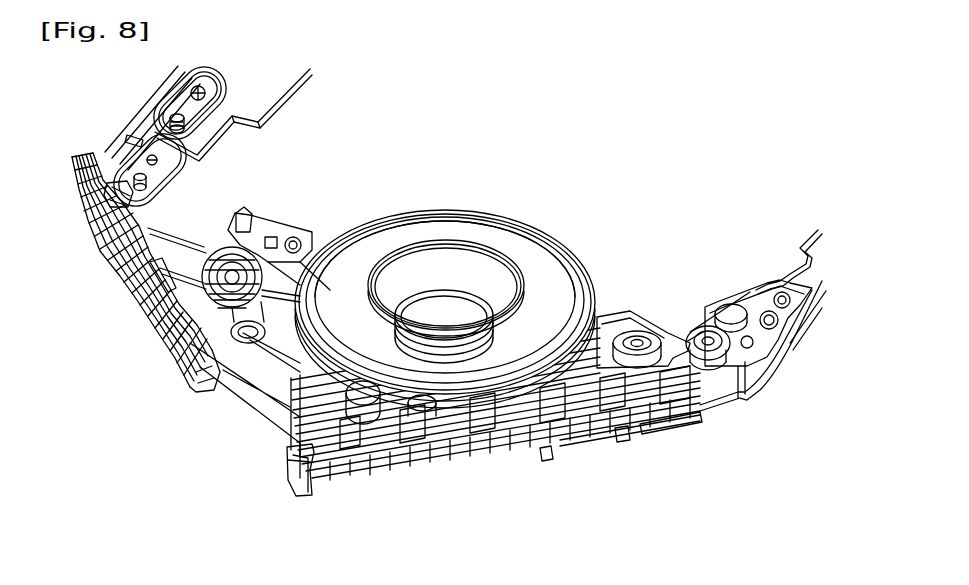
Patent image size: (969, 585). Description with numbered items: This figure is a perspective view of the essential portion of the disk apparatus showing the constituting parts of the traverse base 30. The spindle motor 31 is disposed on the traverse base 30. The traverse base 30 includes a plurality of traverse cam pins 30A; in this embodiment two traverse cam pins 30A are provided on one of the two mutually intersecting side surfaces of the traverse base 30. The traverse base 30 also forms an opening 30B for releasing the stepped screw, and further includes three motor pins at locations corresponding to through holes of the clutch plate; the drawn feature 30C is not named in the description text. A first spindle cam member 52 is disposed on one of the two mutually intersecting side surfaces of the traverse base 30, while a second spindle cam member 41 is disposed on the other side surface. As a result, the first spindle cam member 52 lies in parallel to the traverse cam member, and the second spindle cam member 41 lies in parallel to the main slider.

The traverse base 30 is at (128, 178).
The traverse cam pins 30A is at (622, 443).
The opening 30B is at (268, 240).
The drive motor 30C is at (233, 237).
The spindle motor 31 is at (540, 235).
The second spindle cam member 41 is at (136, 310).
The first spindle cam member 52 is at (668, 427).